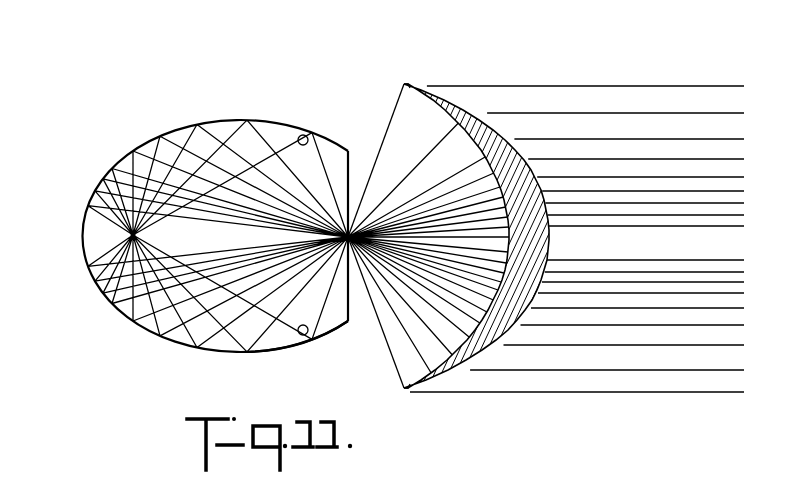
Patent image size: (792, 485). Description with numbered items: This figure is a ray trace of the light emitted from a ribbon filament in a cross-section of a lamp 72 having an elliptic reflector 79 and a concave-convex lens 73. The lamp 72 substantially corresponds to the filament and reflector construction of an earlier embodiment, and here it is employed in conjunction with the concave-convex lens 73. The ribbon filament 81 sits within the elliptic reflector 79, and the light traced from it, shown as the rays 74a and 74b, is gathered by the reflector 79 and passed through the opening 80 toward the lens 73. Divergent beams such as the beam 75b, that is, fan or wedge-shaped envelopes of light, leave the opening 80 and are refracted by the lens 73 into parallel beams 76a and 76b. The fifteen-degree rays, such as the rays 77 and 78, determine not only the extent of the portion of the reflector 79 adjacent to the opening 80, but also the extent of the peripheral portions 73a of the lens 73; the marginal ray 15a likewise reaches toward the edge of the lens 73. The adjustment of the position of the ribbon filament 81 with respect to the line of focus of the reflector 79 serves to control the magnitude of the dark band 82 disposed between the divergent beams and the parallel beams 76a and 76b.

The lamp 72 is at (151, 341).
The lower light rays 74a is at (178, 330).
The upper light rays 74b is at (206, 144).
The 15° ray 77 is at (307, 136).
The 15° ray 78 is at (310, 336).
The reflector 79 is at (283, 353).
The opening 80 is at (348, 287).
The ribbon filament 81 is at (141, 235).
The upper marginal ray 15a is at (390, 138).
The divergent beam 75b is at (397, 351).
The concave-convex lens 73 is at (552, 240).
The peripheral portions of lens 73a is at (404, 82).
The parallel beam 76a is at (699, 69).
The parallel beam 76b is at (659, 394).
The dark band 82 is at (684, 252).